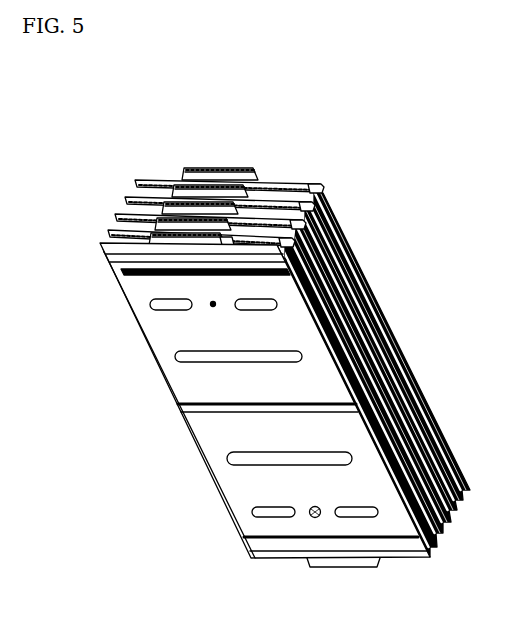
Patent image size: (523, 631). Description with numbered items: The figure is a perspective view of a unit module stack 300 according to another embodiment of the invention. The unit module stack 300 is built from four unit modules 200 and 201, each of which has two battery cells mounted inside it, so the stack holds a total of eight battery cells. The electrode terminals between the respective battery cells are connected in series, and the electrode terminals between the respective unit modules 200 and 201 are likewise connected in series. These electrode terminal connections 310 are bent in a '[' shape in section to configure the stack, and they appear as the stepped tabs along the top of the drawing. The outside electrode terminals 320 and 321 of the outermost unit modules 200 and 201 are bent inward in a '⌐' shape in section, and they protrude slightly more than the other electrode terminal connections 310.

The unit module stack 300 is at (58, 110).
The electrode terminal connections 310 is at (190, 179).
The outside electrode terminal 320 is at (167, 233).
The outside electrode terminal 321 is at (236, 173).
The unit module 200 is at (215, 448).
The unit module 201 is at (388, 318).